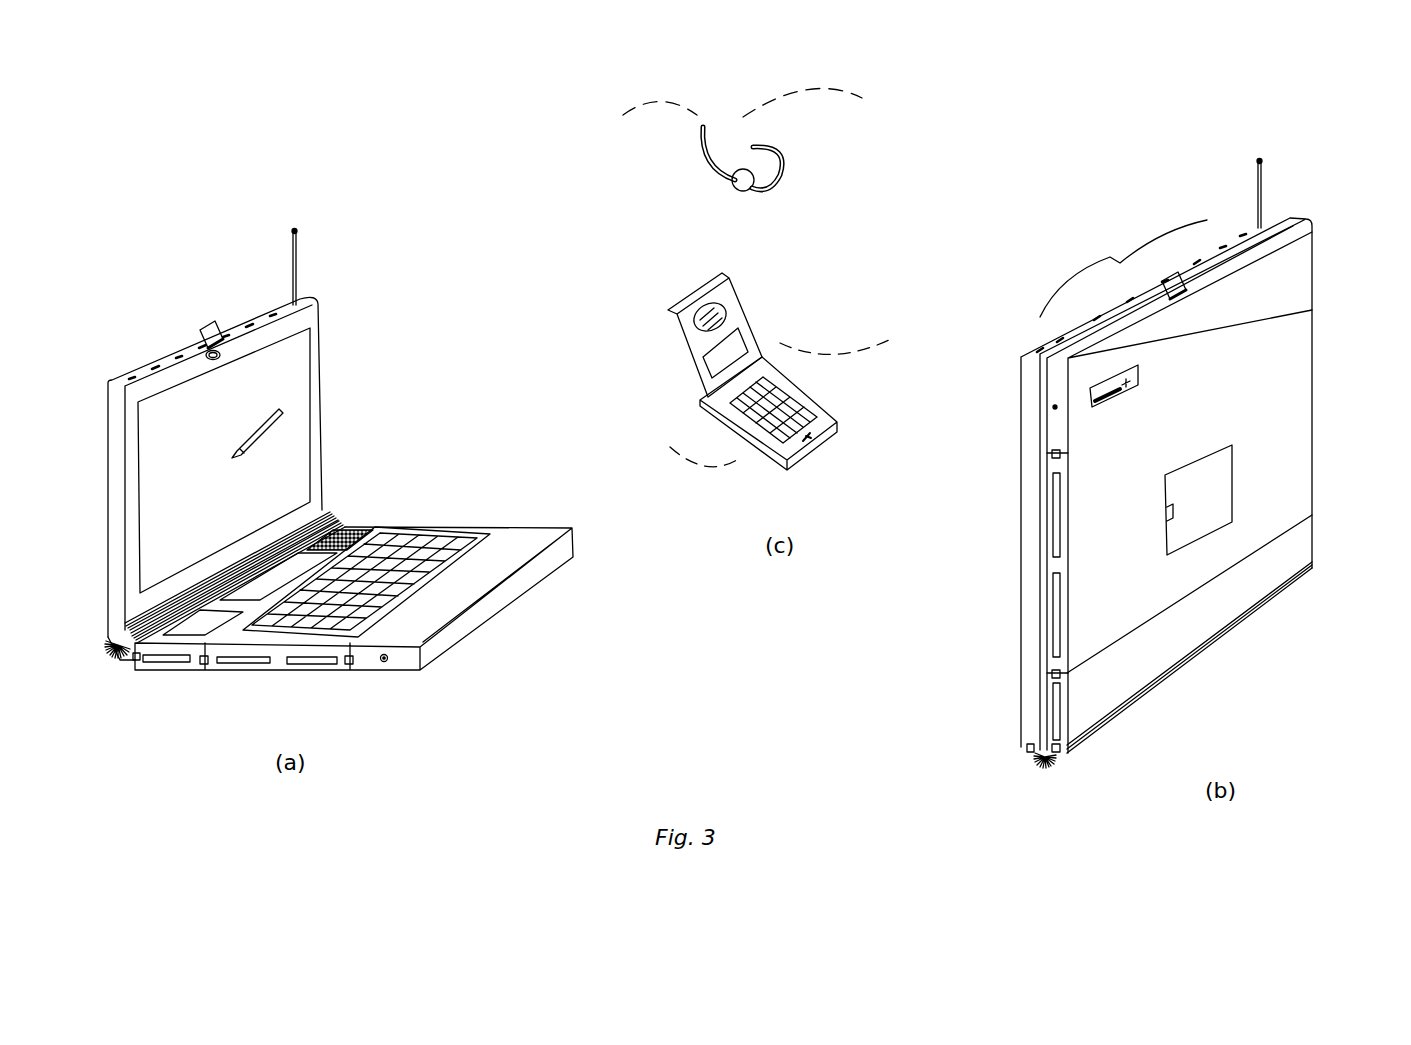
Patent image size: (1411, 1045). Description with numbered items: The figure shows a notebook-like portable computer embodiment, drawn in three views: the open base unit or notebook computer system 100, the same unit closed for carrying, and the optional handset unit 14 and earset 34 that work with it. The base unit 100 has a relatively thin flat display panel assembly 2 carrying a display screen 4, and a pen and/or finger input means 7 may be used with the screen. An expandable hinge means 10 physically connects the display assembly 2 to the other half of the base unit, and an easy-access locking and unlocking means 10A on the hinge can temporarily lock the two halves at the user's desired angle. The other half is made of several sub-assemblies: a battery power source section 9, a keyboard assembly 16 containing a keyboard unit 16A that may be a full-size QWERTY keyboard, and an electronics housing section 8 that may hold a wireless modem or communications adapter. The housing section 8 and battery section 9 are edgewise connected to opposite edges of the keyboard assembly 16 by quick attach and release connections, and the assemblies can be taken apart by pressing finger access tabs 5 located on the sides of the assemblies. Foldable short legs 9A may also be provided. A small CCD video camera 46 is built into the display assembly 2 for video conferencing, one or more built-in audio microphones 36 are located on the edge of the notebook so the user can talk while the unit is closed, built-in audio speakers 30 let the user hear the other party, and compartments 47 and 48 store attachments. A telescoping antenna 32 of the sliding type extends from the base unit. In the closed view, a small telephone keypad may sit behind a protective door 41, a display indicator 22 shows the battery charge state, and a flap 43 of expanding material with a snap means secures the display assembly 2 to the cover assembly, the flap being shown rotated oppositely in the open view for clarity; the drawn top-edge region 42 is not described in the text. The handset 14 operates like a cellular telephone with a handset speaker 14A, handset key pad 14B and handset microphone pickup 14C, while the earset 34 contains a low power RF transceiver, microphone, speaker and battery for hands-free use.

The base unit or notebook computer system 100 is at (175, 246).
The flat display panel assembly 2 is at (115, 498).
The display screen 4 is at (150, 457).
The finger access tabs 5 is at (107, 622).
The pen and/or finger input means 7 is at (250, 445).
The electronics housing section 8 is at (183, 668).
The battery power source section 9 is at (447, 603).
The foldable short leg 9A is at (390, 665).
The expandable hinge means 10 is at (140, 668).
The locking and unlocking means 10A is at (120, 653).
The handset unit 14 is at (737, 320).
The handset speaker 14A is at (703, 312).
The handset key pad 14B is at (783, 405).
The handset microphone pickup 14C is at (810, 443).
The keyboard assembly 16 is at (400, 528).
The keyboard unit 16A is at (418, 548).
The display indicator 22 is at (1137, 382).
The audio speaker 30 is at (348, 540).
The telescoping antenna 32 is at (297, 270).
The earset 34 is at (753, 190).
The audio microphones 36 is at (272, 312).
The protective door 41 is at (1183, 493).
The top edge region 42 is at (1123, 267).
The flap 43 is at (205, 328).
The CCD video camera 46 is at (222, 358).
The compartment 47 is at (210, 620).
The compartment 48 is at (270, 583).